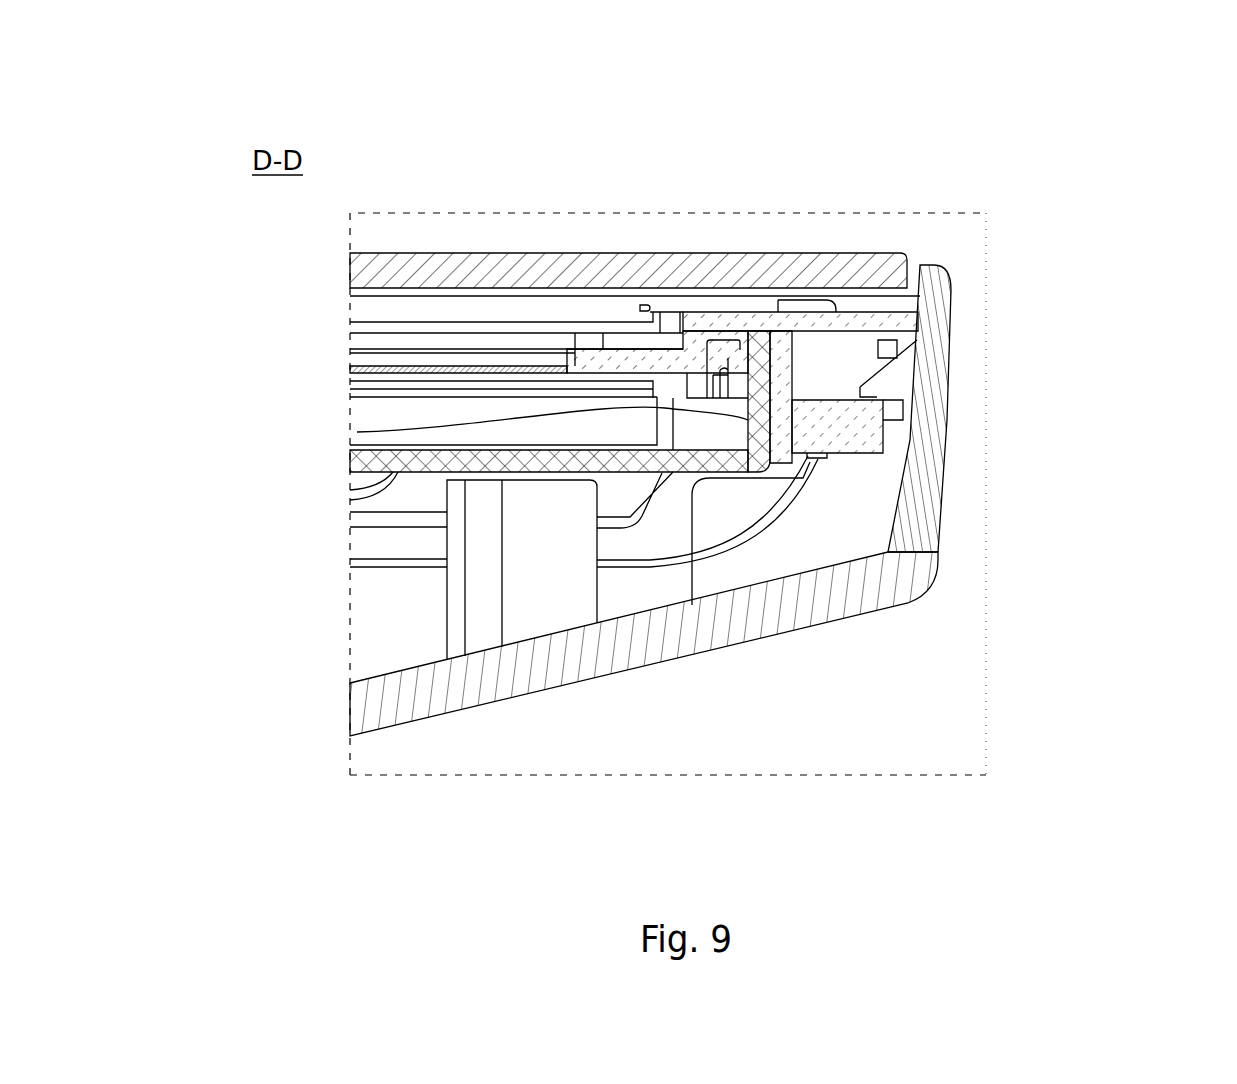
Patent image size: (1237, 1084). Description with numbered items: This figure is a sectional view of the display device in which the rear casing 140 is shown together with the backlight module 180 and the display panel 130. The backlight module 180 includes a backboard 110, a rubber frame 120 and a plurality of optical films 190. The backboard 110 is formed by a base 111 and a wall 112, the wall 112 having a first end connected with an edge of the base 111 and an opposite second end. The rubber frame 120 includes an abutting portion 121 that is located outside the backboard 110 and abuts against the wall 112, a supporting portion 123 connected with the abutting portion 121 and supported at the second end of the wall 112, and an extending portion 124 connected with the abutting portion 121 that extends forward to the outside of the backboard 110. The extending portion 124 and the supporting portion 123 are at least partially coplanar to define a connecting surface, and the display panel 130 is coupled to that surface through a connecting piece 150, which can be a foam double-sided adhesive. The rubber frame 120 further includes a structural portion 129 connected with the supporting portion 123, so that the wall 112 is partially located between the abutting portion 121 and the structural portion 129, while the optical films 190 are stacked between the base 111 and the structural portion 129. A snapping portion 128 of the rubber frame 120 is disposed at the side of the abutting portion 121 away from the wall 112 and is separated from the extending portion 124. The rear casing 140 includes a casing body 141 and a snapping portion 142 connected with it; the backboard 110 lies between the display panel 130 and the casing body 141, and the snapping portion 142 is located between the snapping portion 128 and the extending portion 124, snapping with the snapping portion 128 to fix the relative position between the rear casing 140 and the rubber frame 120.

The backlight module 180 is at (1197, 78).
The backboard 110 is at (240, 405).
The base 111 is at (357, 432).
The wall 112 is at (350, 465).
The rubber frame 120 is at (702, 298).
The abutting portion 121 is at (783, 352).
The supporting portion 123 is at (760, 312).
The extending portion 124 is at (843, 312).
The snapping portion 128 is at (850, 430).
The structural portion 129 is at (667, 352).
The display panel 130 is at (600, 256).
The rear casing 140 is at (1053, 363).
The casing body 141 is at (912, 407).
The snapping portion 142 is at (910, 372).
The connecting piece 150 is at (792, 300).
The optical films 190 is at (350, 407).